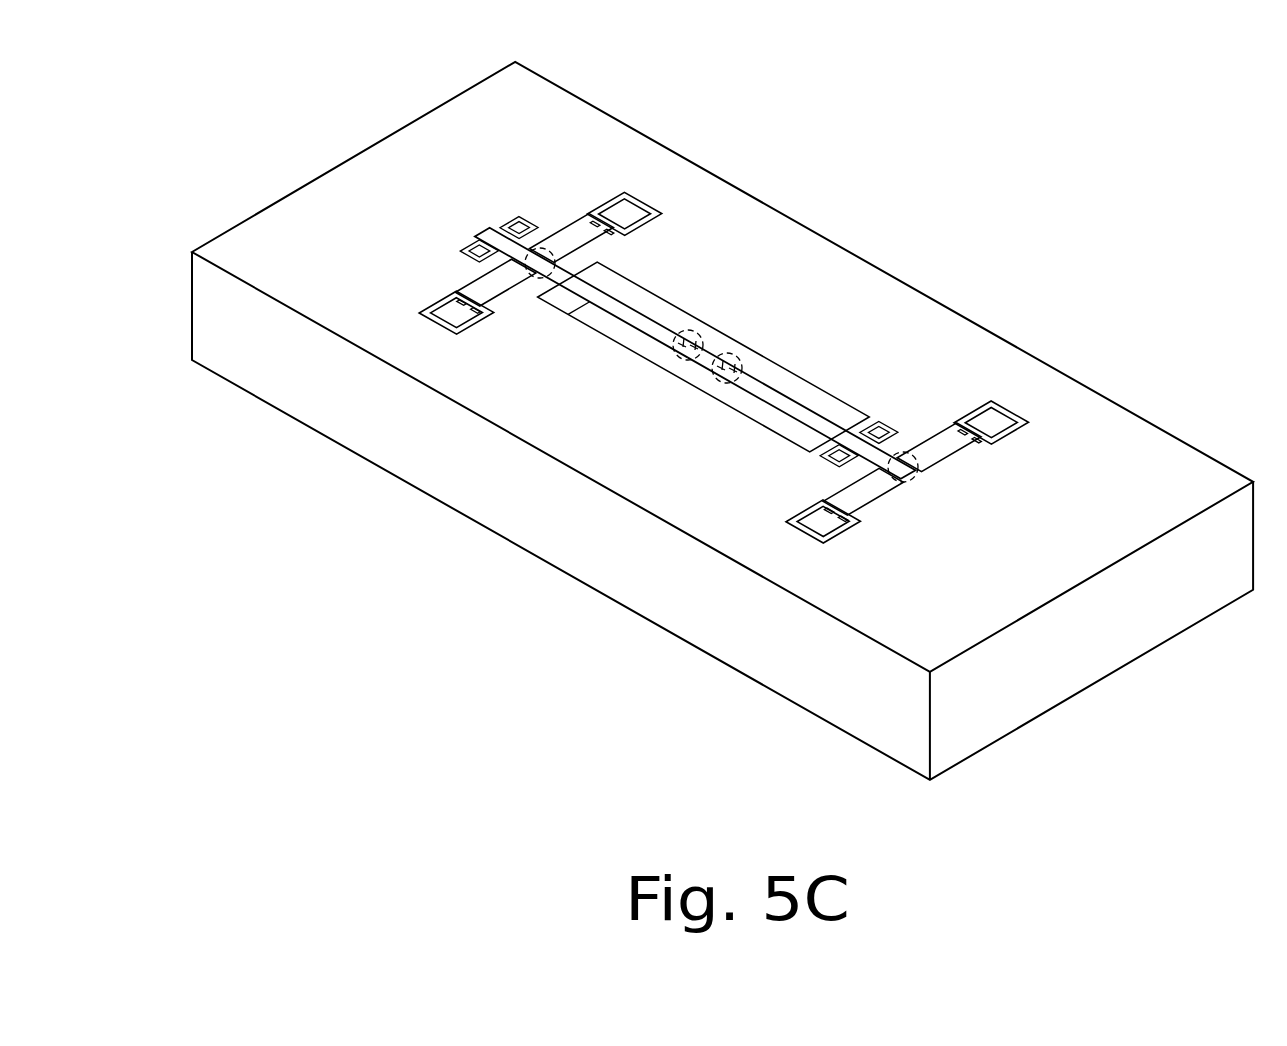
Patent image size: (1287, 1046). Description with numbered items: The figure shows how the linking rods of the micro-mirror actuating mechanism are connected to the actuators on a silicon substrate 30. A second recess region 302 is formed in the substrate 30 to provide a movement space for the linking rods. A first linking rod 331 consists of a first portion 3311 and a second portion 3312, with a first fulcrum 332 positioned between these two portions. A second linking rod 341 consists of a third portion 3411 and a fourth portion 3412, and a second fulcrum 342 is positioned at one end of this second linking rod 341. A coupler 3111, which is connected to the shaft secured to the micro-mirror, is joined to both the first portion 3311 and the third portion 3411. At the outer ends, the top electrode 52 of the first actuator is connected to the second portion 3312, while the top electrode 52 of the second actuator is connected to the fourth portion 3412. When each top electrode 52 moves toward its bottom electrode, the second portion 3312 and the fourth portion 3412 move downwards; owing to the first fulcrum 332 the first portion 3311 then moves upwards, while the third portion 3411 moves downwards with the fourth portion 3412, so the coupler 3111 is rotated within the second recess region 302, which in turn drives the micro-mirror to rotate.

The silicon substrate 30 is at (1125, 497).
The second recess region 302 is at (621, 332).
The second linking rod 341 is at (610, 305).
The first linking rod 331 is at (820, 422).
The second fulcrum 342 is at (483, 237).
The first fulcrum 332 is at (870, 420).
The top electrode 52 is at (573, 237).
The fourth portion 3412 is at (537, 262).
The coupler 3111 is at (707, 350).
The third portion 3411 is at (693, 332).
The first portion 3311 is at (742, 352).
The second portion 3312 is at (913, 447).